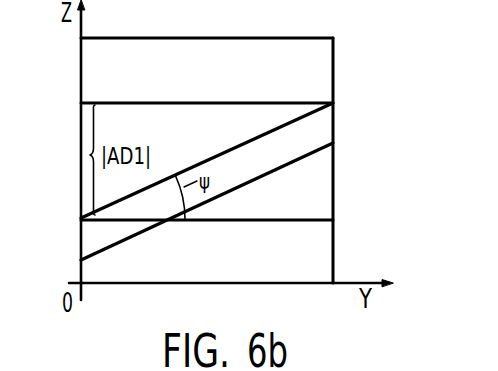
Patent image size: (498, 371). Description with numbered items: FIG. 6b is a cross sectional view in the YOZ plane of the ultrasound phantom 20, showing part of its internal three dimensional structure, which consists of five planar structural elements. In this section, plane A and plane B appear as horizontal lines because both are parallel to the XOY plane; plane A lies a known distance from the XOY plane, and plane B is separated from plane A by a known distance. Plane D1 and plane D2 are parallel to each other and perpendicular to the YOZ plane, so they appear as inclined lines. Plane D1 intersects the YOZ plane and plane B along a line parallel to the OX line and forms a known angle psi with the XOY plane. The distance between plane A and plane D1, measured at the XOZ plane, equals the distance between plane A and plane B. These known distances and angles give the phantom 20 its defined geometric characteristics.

The ultrasound phantom 20 is at (205, 37).
The plane A is at (333, 95).
The plane B is at (310, 219).
The plane D1 is at (245, 142).
The plane D2 is at (285, 166).